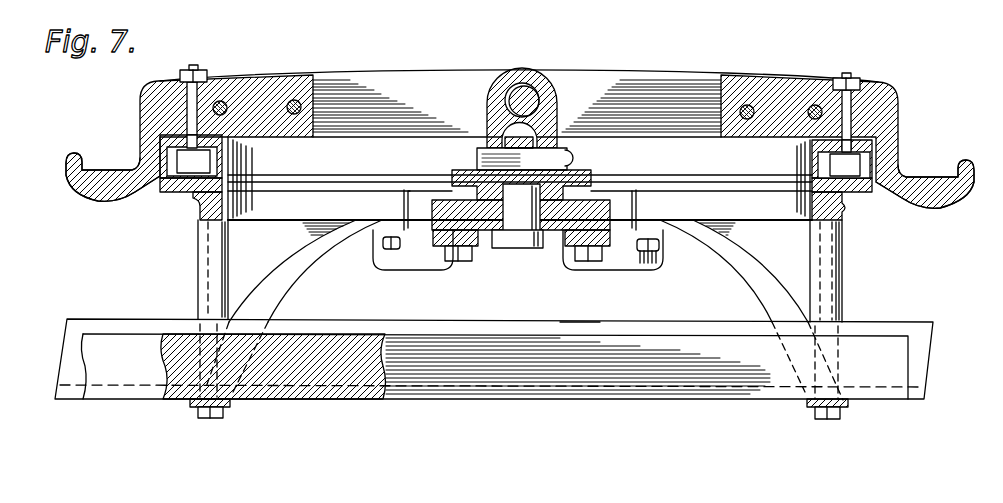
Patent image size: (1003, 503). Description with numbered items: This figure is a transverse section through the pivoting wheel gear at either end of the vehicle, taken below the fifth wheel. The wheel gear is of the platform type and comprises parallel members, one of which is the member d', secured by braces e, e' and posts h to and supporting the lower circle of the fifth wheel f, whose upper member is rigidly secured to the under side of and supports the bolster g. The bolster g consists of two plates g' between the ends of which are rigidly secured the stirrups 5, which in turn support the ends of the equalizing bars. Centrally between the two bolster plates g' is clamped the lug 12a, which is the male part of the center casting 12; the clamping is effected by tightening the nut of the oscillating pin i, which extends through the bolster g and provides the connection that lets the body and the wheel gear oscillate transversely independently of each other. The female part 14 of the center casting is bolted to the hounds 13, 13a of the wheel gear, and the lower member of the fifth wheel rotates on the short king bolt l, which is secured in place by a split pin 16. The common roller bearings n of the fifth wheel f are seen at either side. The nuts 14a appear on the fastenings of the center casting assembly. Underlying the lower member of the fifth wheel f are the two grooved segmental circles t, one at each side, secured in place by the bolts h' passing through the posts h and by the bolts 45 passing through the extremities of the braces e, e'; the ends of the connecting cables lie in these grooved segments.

The bolster g is at (520, 125).
The oscillating pin i is at (540, 95).
The lug 12a is at (556, 116).
The split pin 16 is at (568, 157).
The center casting 12 is at (463, 172).
The female part of center casting 14 is at (595, 183).
The fifth wheel f is at (520, 178).
The roller bearing n is at (172, 182).
The stirrup 5 is at (520, 173).
The grooved segmental circle t is at (196, 205).
The post h is at (517, 271).
The brace e' is at (293, 306).
The brace e is at (751, 310).
The bolt 45 is at (392, 249).
The hound 13 is at (443, 250).
The nut 14a is at (465, 262).
The king bolt l is at (522, 234).
The hound 13a is at (568, 247).
The parallel member d' is at (579, 310).
The bolster plate g' is at (494, 375).
The bolt h' is at (517, 388).